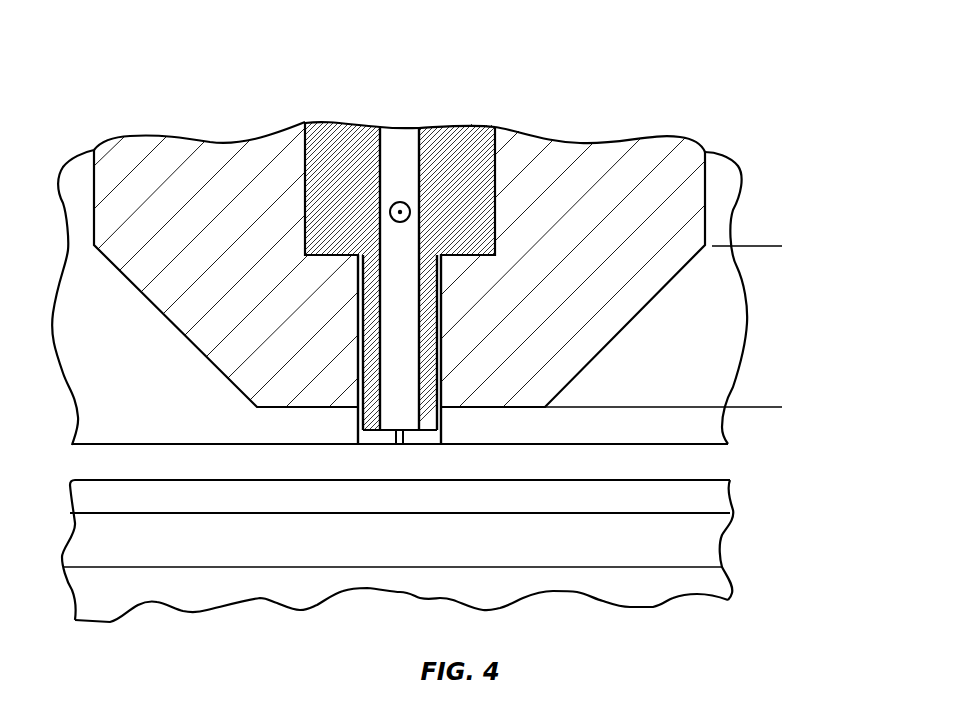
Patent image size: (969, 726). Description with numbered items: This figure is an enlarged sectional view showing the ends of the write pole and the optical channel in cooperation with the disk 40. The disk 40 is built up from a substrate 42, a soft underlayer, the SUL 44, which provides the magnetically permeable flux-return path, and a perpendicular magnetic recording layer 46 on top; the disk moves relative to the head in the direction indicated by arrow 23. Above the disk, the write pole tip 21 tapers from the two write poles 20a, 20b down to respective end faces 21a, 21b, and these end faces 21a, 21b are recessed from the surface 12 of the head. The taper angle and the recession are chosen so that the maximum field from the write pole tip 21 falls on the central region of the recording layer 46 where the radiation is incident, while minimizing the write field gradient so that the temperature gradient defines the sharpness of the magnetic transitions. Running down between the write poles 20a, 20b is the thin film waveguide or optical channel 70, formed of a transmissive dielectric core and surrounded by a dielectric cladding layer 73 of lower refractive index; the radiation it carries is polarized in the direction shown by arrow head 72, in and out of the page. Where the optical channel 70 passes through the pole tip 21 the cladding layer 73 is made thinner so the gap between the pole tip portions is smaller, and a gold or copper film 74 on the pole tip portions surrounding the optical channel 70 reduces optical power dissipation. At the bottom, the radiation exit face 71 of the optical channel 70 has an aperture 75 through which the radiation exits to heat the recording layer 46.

The surface 12 is at (718, 448).
The write pole 20a is at (175, 327).
The write pole 20b is at (627, 327).
The write pole tip 21 is at (788, 246).
The end face 21a is at (277, 410).
The end face 21b is at (533, 410).
The direction of medium motion 23 is at (743, 536).
The disk 40 is at (747, 605).
The substrate 42 is at (108, 610).
The SUL 44 is at (713, 528).
The perpendicular magnetic recording layer 46 is at (713, 502).
The optical channel 70 is at (398, 140).
The radiation exit face 71 is at (415, 444).
The arrow head 72 is at (400, 200).
The dielectric cladding layer 73 is at (333, 135).
The film 74 is at (362, 433).
The aperture 75 is at (400, 444).